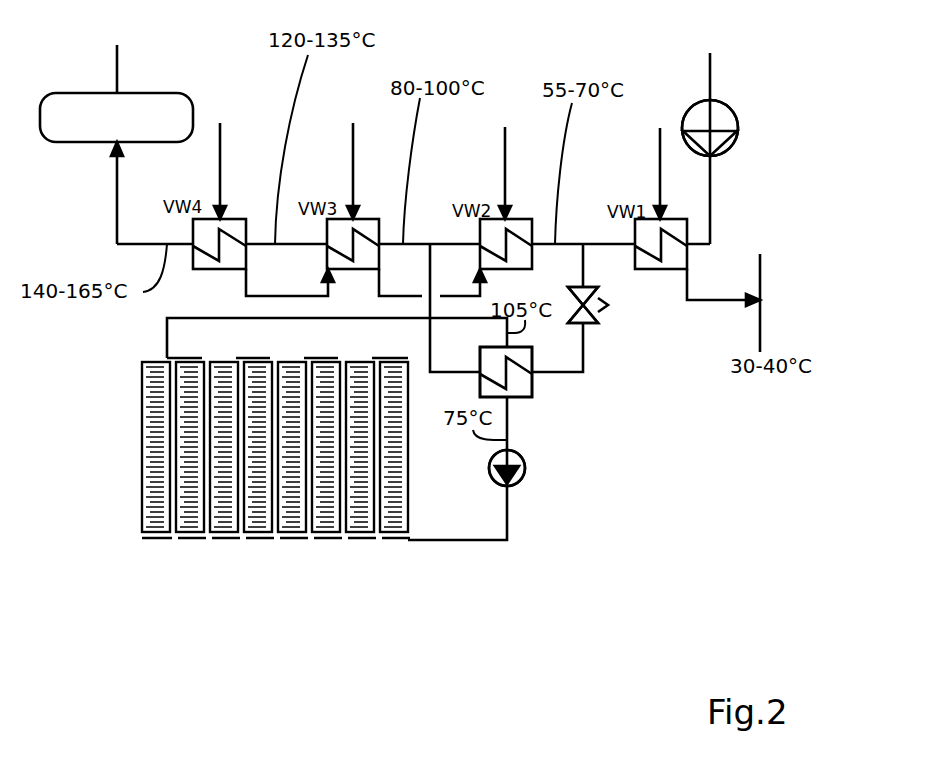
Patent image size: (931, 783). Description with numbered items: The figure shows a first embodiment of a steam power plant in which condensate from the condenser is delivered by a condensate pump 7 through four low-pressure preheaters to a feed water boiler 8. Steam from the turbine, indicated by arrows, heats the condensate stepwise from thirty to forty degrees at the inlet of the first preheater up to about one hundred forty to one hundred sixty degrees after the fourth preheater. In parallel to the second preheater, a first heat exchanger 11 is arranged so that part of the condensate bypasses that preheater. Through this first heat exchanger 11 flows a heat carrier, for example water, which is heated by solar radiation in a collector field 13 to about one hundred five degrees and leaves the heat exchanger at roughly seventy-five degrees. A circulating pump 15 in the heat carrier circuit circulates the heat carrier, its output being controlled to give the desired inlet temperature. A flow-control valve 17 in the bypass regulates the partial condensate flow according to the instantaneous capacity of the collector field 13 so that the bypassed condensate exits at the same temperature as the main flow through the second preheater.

The condensate pump 7 is at (730, 110).
The feed water boiler 8 is at (182, 93).
The first heat exchanger 11 is at (532, 393).
The collector field 13 is at (325, 600).
The circulating pump 15 is at (522, 477).
The flow-control valve 17 is at (590, 315).